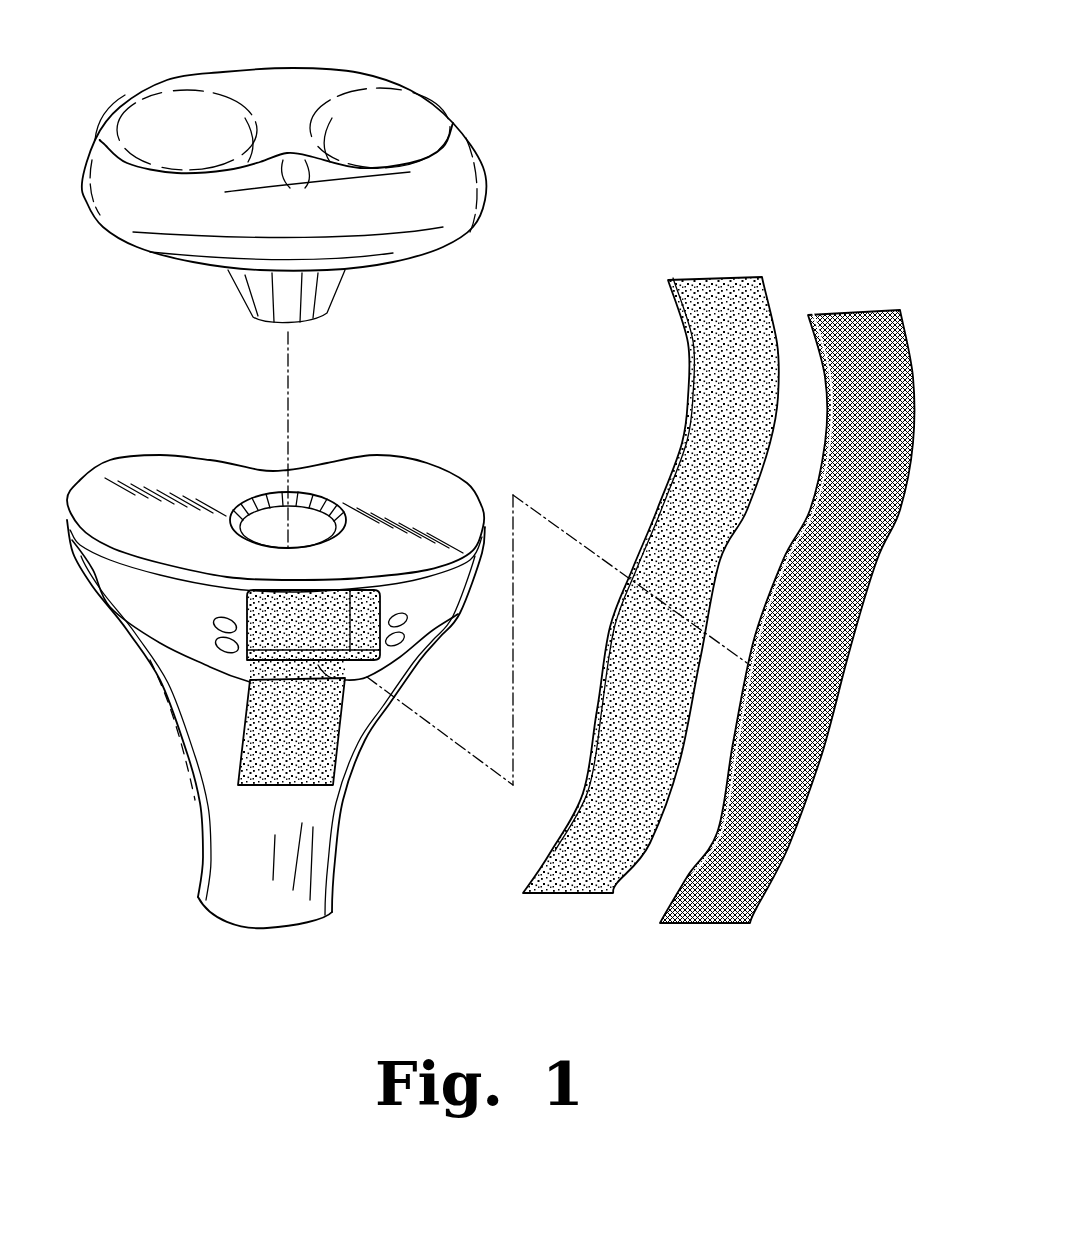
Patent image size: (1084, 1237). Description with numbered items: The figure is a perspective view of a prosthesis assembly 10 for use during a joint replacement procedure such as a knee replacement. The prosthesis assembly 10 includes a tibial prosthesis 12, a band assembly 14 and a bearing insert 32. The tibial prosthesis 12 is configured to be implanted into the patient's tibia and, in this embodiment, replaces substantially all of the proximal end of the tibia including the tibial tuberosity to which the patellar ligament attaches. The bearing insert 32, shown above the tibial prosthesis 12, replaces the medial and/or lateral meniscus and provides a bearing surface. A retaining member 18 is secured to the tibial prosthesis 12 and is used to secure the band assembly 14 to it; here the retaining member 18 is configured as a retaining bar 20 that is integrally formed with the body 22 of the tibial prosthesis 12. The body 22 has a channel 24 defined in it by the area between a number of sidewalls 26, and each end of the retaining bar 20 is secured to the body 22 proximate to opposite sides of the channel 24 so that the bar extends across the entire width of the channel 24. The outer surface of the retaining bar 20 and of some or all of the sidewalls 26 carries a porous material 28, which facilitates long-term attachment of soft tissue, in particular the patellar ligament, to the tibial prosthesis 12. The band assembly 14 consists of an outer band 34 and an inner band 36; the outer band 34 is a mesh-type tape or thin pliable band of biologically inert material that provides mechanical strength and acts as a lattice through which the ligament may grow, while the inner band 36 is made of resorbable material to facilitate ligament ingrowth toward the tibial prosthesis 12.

The prosthesis assembly 10 is at (643, 93).
The tibial prosthesis 12 is at (388, 483).
The band assembly 14 is at (808, 272).
The retaining member 18 is at (277, 666).
The retaining bar 20 is at (320, 667).
The body 22 is at (436, 613).
The channel 24 is at (250, 598).
The sidewalls 26 is at (382, 608).
The porous material 28 is at (242, 750).
The bearing insert 32 is at (447, 170).
The outer band 34 is at (877, 567).
The inner band 36 is at (682, 443).